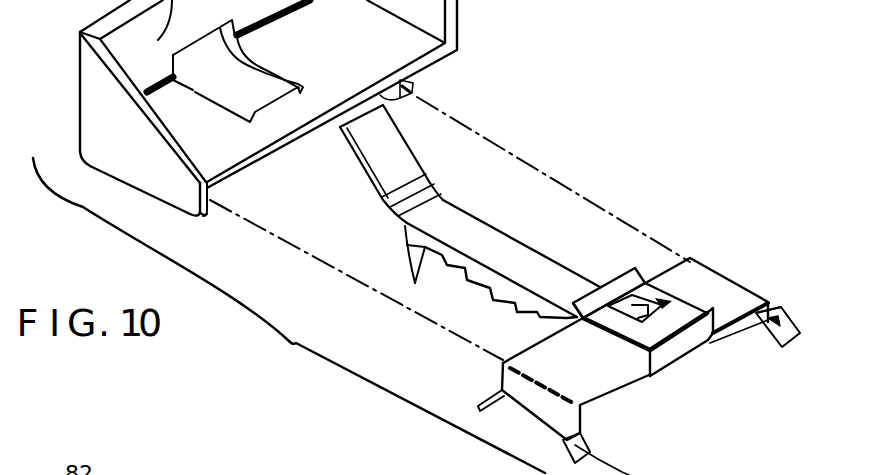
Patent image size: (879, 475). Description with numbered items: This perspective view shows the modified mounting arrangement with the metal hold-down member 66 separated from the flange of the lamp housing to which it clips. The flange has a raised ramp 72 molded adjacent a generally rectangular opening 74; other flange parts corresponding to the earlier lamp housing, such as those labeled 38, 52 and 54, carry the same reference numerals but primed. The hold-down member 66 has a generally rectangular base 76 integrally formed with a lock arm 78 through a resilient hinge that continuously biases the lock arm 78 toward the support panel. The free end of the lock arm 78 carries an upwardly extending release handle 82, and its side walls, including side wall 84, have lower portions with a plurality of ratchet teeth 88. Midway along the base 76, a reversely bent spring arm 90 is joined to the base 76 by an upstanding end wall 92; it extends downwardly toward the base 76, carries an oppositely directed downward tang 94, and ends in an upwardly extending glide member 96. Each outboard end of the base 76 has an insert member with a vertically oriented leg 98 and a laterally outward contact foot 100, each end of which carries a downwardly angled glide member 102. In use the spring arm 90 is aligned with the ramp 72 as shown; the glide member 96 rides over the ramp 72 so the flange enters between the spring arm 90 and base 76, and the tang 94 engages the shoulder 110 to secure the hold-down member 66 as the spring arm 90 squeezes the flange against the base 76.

The housing 38 is at (110, 130).
The latch tab 52 is at (413, 92).
The corner tab 54 is at (207, 200).
The hold-down member 66 is at (638, 254).
The ramp member 72 is at (283, 110).
The generally rectangular opening 74 is at (193, 90).
The base 76 is at (570, 371).
The lock arm 78 is at (490, 204).
The release handle 82 is at (385, 158).
The side wall 84 is at (486, 272).
The ratchet teeth 88 is at (417, 265).
The spring arm 90 is at (672, 279).
The end wall 92 is at (677, 347).
The tang 94 is at (660, 295).
The glide member 96 is at (603, 296).
The leg 98 is at (590, 428).
The contact foot 100 is at (497, 405).
The glide member 102 is at (485, 392).
The shoulder 110 is at (257, 98).